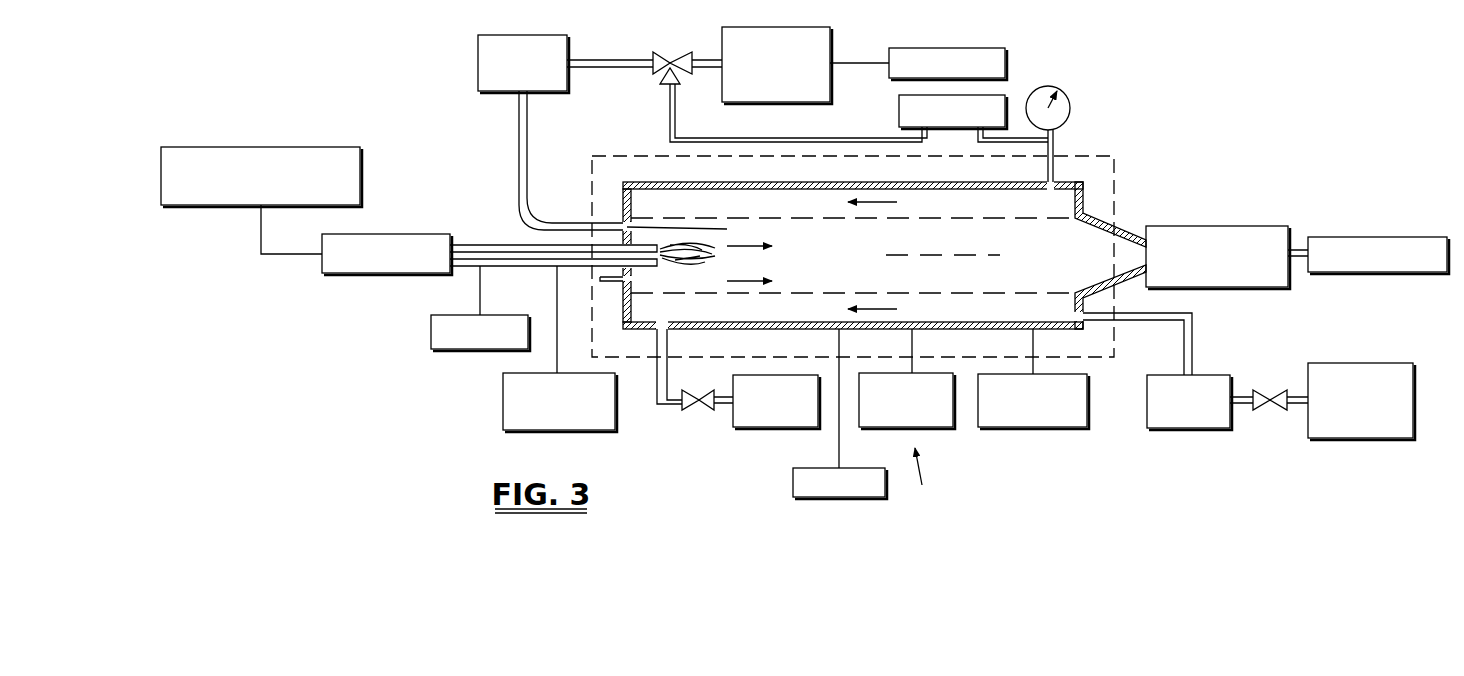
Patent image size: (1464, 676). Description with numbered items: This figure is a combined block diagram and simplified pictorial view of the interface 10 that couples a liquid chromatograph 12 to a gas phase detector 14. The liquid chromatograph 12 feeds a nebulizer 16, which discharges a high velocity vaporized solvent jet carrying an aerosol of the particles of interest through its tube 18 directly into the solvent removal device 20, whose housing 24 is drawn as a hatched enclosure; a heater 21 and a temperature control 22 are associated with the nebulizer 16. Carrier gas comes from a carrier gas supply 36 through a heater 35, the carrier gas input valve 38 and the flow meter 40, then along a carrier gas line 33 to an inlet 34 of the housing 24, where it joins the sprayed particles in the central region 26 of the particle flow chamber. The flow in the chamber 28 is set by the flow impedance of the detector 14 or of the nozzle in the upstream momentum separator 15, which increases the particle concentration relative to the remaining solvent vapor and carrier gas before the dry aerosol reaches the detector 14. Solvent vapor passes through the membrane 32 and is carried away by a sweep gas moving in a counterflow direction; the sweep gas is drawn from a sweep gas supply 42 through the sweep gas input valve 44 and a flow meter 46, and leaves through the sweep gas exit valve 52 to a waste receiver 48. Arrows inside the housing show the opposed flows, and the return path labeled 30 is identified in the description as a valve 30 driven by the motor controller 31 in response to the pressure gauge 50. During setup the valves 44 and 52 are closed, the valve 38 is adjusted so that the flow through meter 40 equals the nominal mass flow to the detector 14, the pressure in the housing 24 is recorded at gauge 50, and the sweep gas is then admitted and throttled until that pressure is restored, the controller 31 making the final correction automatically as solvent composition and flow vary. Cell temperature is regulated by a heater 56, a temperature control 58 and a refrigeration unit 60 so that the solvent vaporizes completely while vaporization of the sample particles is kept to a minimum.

The interface system 10 is at (928, 479).
The liquid chromatograph 12 is at (293, 147).
The gas phase detector 14 is at (1361, 237).
The momentum separator 15 is at (1226, 226).
The nebulizer 16 is at (412, 234).
The nebulizer tube 18 is at (490, 244).
The solvent removal device 20 is at (1118, 178).
The heater 21 is at (431, 333).
The temperature control 22 is at (503, 405).
The housing 24 is at (1074, 183).
The central flow region 26 is at (943, 255).
The chamber 28 is at (1023, 289).
The valve 30 is at (1018, 217).
The motor controller 31 is at (1006, 95).
The membrane 32 is at (727, 297).
The carrier gas line 33 is at (519, 130).
The carrier gas inlet 34 is at (689, 231).
The heater 35 is at (608, 283).
The carrier gas supply 36 is at (833, 40).
The carrier gas input valve 38 is at (660, 55).
The meter 40 is at (478, 57).
The sweep gas supply 42 is at (1348, 438).
The sweep gas input valve 44 is at (1275, 392).
The flow meter 46 is at (1228, 375).
The waste container 48 is at (746, 427).
The gauge 50 is at (1070, 100).
The sweep gas exit valve 52 is at (683, 405).
The heater 56 is at (940, 427).
The temperature control 58 is at (1031, 427).
The refrigerator 60 is at (793, 482).